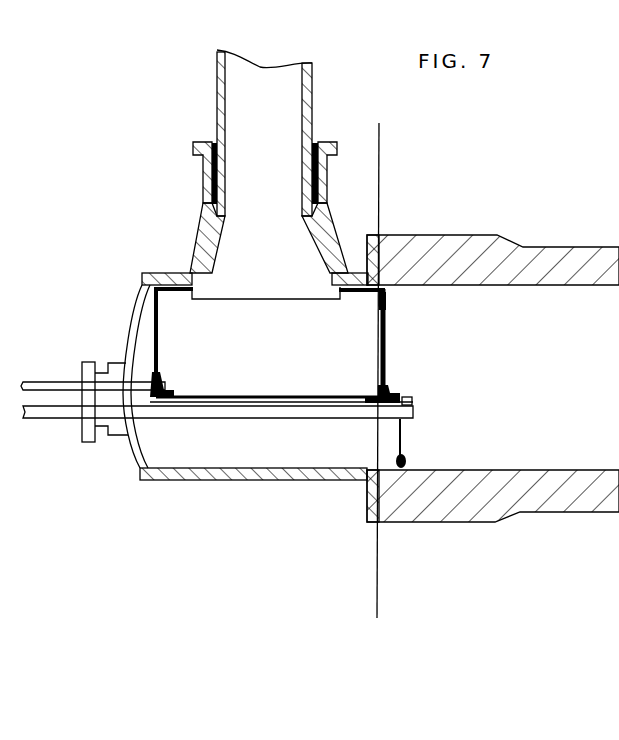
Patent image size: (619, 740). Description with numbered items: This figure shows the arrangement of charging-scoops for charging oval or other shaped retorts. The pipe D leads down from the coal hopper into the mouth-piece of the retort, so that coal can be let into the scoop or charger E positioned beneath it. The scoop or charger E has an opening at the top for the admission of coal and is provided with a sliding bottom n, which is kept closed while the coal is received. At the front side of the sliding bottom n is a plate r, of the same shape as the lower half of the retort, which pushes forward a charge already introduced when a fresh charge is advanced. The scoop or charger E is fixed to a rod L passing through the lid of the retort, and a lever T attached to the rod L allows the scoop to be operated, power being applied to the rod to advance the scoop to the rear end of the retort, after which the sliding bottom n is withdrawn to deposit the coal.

The pipe D is at (269, 161).
The scoop or charger E is at (275, 345).
The sliding bottom n is at (281, 389).
The plate r is at (406, 443).
The lever T is at (93, 375).
The rod L is at (218, 424).